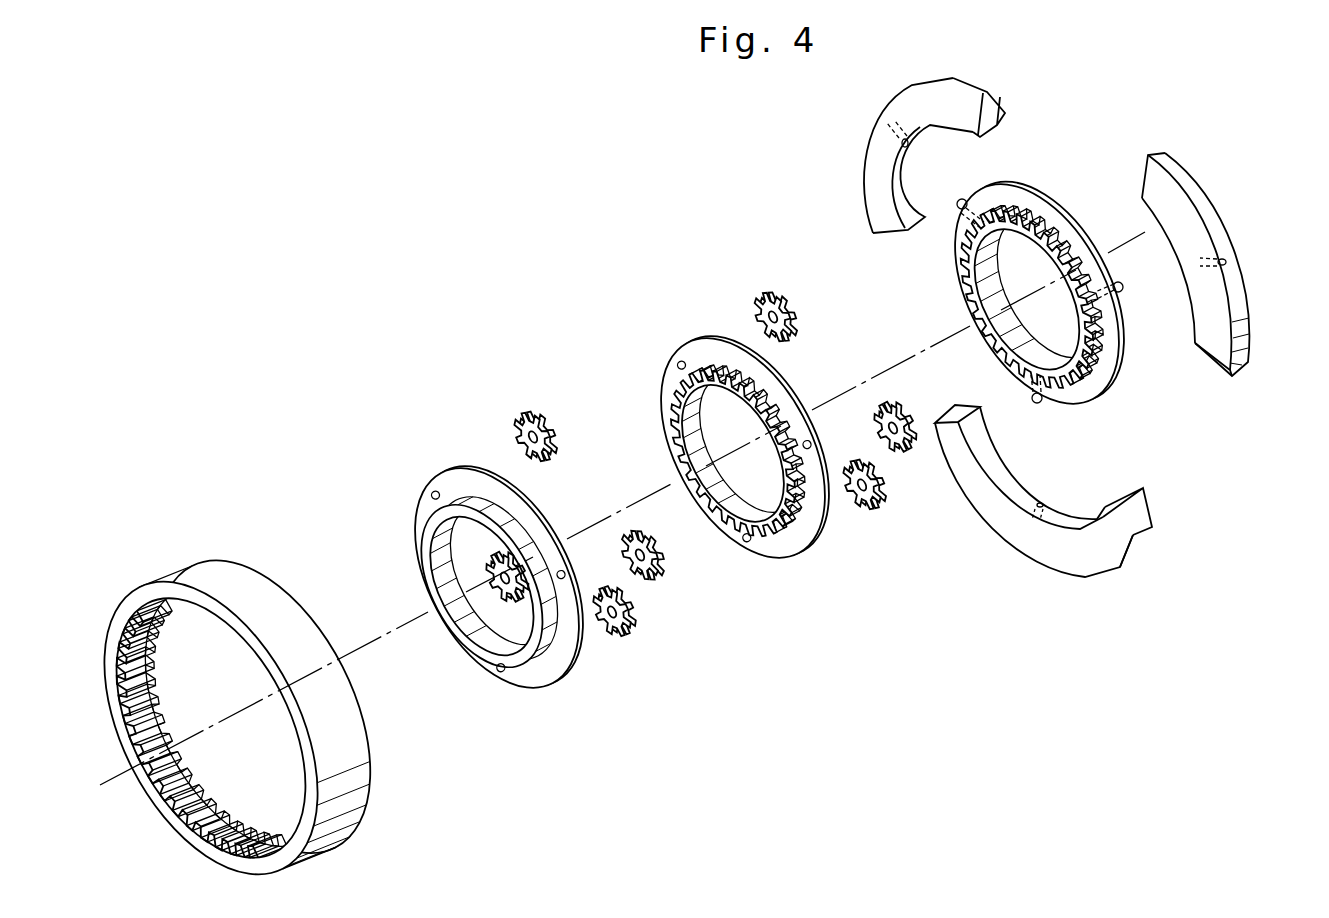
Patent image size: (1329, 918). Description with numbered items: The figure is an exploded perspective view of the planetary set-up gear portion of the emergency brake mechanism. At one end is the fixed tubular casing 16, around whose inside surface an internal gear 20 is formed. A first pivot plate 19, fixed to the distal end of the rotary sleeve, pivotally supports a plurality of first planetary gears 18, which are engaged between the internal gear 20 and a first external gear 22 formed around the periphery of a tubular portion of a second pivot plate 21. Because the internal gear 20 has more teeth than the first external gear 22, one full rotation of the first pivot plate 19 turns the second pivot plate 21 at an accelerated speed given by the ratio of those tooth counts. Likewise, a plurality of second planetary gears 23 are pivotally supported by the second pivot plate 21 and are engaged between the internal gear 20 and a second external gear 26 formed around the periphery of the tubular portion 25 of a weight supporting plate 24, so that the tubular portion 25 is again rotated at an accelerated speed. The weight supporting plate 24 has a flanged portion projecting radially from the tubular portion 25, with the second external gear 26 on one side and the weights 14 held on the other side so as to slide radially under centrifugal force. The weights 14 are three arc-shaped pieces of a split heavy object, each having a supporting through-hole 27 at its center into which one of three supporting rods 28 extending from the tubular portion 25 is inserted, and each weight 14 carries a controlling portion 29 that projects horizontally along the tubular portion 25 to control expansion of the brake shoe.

The weights 14 is at (888, 128).
The tubular casing 16 is at (237, 696).
The first planetary gears 18 is at (548, 412).
The first pivot plate 19 is at (453, 483).
The internal gear 20 is at (128, 667).
The second pivot plate 21 is at (745, 445).
The first external gear 22 is at (789, 542).
The second planetary gears 23 is at (790, 296).
The weight supporting plate 24 is at (1037, 288).
The tubular portion 25 is at (1032, 297).
The second external gear 26 is at (1038, 293).
The supporting through-holes 27 is at (902, 146).
The supporting rods 28 is at (960, 199).
The controlling portion 29 is at (1003, 113).